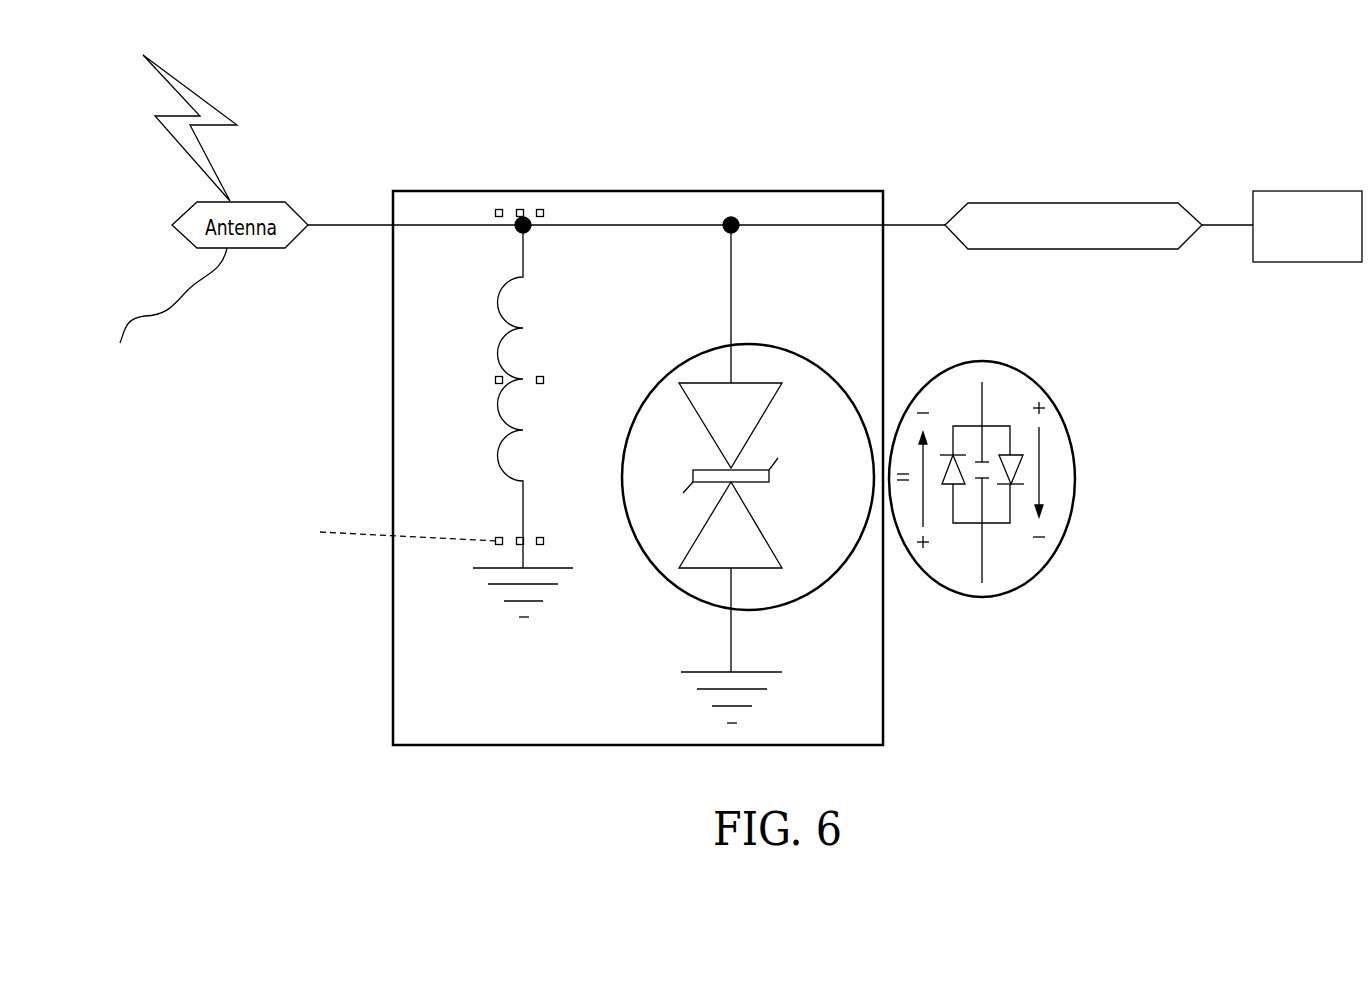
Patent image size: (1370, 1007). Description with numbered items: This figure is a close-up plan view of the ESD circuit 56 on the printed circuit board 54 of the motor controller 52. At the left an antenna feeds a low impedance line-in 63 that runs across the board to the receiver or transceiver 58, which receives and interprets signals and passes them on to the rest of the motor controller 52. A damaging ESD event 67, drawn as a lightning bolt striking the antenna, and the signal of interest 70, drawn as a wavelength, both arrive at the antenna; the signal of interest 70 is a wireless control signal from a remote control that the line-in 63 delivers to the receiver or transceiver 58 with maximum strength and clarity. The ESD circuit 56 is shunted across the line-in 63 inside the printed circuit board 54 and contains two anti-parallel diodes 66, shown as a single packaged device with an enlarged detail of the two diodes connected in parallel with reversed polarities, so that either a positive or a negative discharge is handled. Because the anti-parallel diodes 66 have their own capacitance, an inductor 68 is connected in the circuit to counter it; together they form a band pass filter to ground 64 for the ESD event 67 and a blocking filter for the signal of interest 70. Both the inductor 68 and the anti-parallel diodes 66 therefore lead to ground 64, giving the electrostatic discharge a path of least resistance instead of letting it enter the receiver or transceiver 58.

The motor controller 52 is at (1310, 191).
The printed circuit board 54 is at (648, 174).
The ESD circuit 56 is at (370, 573).
The receiver or transceiver 58 is at (1065, 202).
The line-in 63 is at (353, 224).
The ground 64 is at (497, 588).
The anti-parallel diodes 66 is at (773, 400).
The ESD event 67 is at (202, 98).
The inductor 68 is at (497, 350).
The signal of interest 70 is at (170, 310).